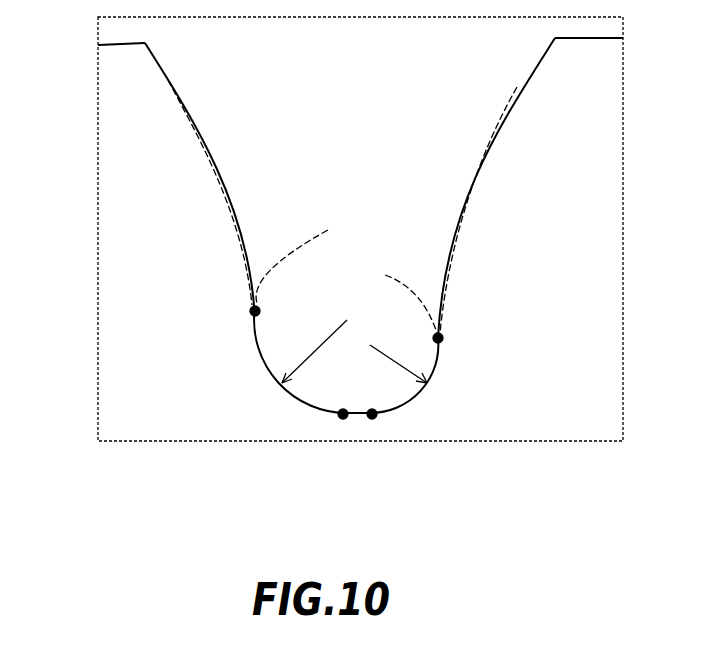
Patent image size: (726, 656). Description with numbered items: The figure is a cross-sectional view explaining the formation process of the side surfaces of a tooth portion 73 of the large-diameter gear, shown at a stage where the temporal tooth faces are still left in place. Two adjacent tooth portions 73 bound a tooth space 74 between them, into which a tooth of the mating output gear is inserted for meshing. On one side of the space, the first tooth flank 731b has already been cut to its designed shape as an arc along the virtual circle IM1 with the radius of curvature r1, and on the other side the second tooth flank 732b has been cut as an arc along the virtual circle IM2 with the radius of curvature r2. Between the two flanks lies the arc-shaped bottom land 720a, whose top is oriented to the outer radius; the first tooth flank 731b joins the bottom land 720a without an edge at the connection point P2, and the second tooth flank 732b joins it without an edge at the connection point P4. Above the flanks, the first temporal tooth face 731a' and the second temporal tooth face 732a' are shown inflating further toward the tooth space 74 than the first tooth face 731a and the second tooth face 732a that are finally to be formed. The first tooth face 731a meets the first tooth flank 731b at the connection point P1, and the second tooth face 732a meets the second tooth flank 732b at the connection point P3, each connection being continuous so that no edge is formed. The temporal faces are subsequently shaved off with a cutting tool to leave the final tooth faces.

The tooth portion 73 is at (140, 167).
The tooth space 74 is at (364, 103).
The first tooth face 731a is at (222, 177).
The first temporal tooth face 731a' is at (226, 176).
The second tooth face 732a is at (475, 188).
The second temporal tooth face 732a' is at (459, 190).
The first tooth flank 731b is at (262, 364).
The second tooth flank 732b is at (440, 360).
The bottom land 720a is at (358, 413).
The connection point P1 is at (250, 311).
The connection point P2 is at (343, 416).
The connection point P3 is at (442, 334).
The connection point P4 is at (372, 416).
The virtual circle IM1 is at (316, 257).
The virtual circle IM2 is at (384, 294).
The radius of curvature r1 is at (314, 349).
The radius of curvature r2 is at (398, 352).